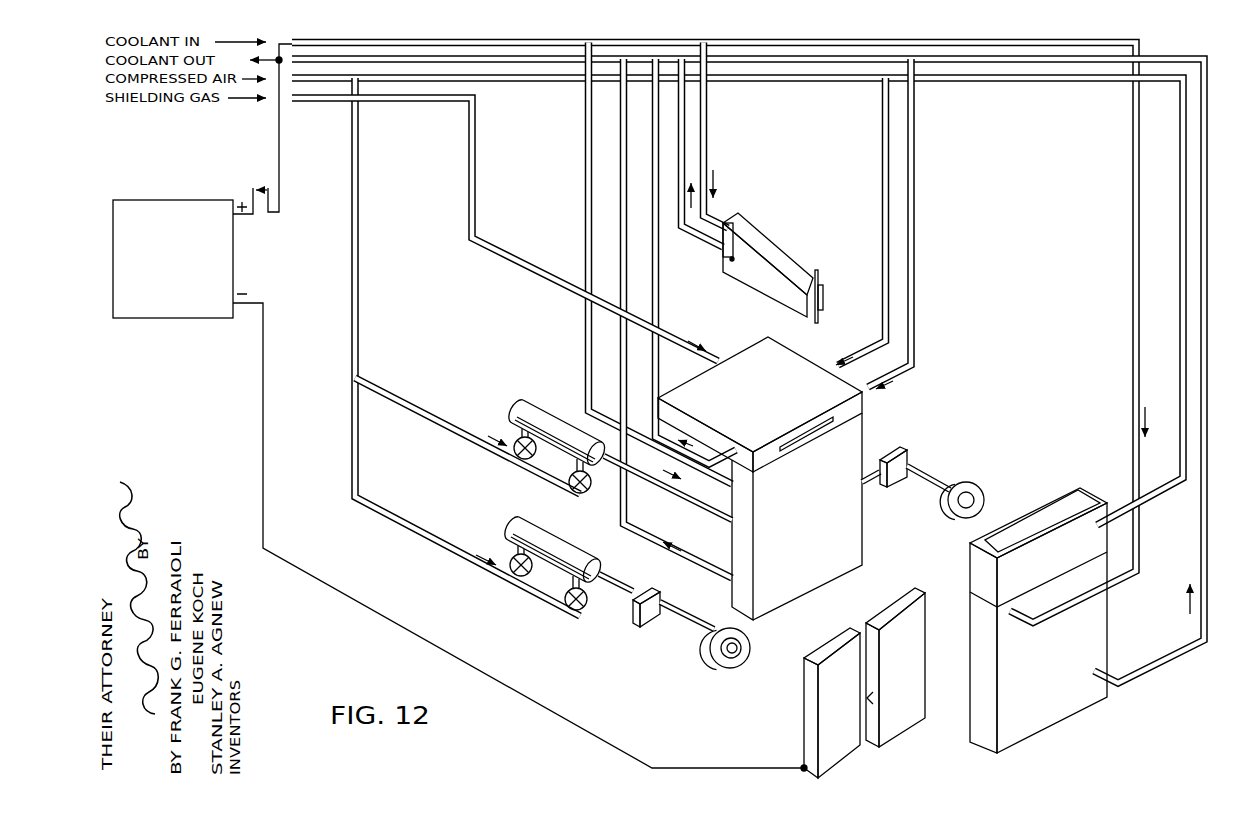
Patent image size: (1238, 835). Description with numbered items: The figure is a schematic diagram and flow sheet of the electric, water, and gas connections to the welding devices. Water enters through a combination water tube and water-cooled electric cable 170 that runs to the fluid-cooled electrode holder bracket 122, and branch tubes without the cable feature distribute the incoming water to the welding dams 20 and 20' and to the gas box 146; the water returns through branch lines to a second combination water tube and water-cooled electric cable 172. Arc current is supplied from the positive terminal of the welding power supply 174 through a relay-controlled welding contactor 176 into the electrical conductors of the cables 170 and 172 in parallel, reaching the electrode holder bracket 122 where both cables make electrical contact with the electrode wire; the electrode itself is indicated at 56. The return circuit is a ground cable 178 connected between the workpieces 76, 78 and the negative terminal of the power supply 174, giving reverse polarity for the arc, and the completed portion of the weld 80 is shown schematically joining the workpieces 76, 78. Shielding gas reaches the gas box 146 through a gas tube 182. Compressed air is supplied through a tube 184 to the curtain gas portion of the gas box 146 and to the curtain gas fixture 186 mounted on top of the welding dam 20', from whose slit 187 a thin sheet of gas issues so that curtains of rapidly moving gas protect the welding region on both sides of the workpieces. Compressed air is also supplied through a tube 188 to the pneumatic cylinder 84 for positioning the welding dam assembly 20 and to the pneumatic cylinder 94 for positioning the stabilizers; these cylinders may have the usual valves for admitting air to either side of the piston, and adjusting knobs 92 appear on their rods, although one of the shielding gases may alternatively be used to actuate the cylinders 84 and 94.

The combination water tube and water-cooled electric cable 170 is at (313, 41).
The combination water tube and water-cooled electric cable 172 is at (404, 58).
The gas tube 182 is at (436, 102).
The tube 184 is at (497, 80).
The relay-controlled welding contactor 176 is at (254, 186).
The welding power supply 174 is at (178, 314).
The tube 188 is at (359, 257).
The ground cable 178 is at (264, 422).
The pneumatic cylinder 84 is at (534, 405).
The pneumatic cylinder 94 is at (538, 530).
The fluid-cooled electrode holder bracket 122 is at (790, 263).
The electrode 56 is at (814, 324).
The gas box 146 is at (773, 403).
The welding dam 20 is at (841, 516).
The adjusting knob 92 is at (978, 494).
The slit 187 is at (1070, 483).
The curtain gas fixture 186 is at (1106, 503).
The welding dam 20' is at (1038, 620).
The workpiece 76 is at (821, 697).
The workpiece 78 is at (915, 687).
The completed portion of the weld 80 is at (873, 737).